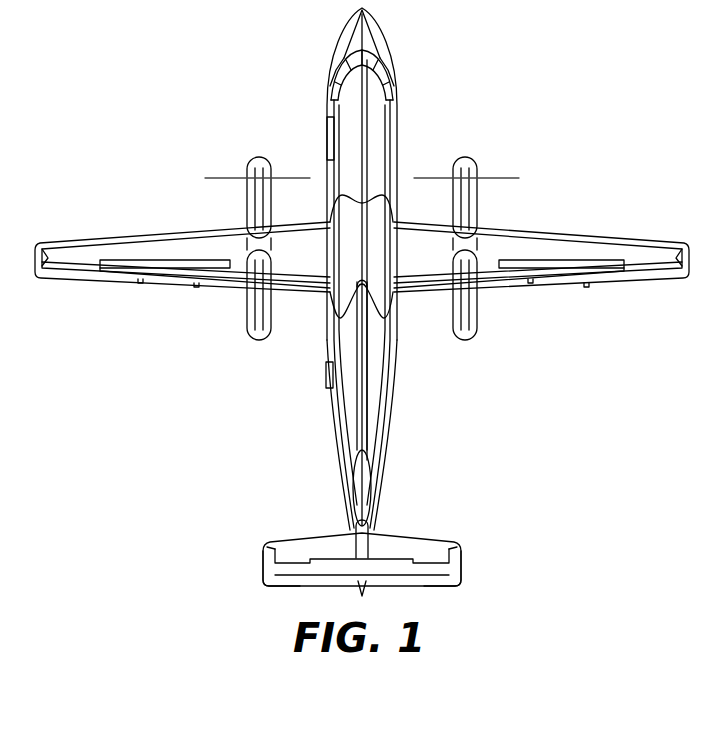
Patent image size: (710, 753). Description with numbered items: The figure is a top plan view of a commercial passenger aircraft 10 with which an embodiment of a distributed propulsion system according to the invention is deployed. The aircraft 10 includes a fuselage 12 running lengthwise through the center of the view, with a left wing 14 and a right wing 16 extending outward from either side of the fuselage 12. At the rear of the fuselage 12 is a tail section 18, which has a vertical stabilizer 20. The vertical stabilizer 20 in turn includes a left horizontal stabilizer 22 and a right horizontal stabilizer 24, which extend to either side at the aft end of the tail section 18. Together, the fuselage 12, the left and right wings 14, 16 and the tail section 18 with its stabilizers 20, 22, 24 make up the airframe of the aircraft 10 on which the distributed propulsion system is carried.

The commercial passenger aircraft 10 is at (192, 72).
The fuselage 12 is at (398, 135).
The left wing 14 is at (120, 232).
The right wing 16 is at (583, 230).
The tail section 18 is at (278, 510).
The vertical stabilizer 20 is at (372, 545).
The left horizontal stabilizer 22 is at (285, 580).
The right horizontal stabilizer 24 is at (441, 580).